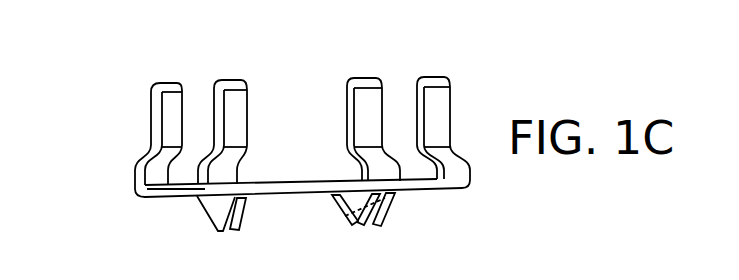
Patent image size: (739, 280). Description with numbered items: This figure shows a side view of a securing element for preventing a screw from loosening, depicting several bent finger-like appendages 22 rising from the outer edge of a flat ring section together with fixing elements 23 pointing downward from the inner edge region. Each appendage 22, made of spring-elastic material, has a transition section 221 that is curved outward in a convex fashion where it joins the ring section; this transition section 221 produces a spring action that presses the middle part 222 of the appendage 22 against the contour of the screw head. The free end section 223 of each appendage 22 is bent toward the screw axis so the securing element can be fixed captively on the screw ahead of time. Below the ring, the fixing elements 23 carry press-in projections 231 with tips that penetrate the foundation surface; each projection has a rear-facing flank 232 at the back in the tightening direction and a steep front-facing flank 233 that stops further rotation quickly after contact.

The finger-like appendage 22 is at (137, 80).
The transition section 221 is at (133, 174).
The middle part 222 is at (150, 118).
The free end section 223 is at (167, 83).
The fixing element 23 is at (192, 210).
The press-in projection 231 is at (220, 235).
The rear-facing flank 232 is at (360, 228).
The front-facing flank 233 is at (336, 229).